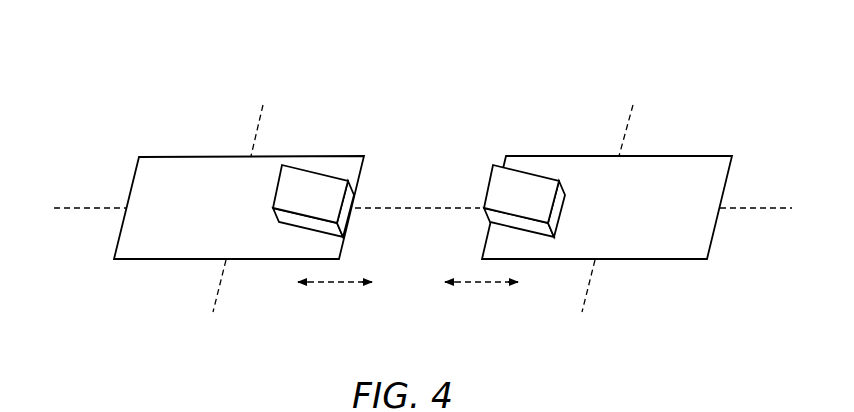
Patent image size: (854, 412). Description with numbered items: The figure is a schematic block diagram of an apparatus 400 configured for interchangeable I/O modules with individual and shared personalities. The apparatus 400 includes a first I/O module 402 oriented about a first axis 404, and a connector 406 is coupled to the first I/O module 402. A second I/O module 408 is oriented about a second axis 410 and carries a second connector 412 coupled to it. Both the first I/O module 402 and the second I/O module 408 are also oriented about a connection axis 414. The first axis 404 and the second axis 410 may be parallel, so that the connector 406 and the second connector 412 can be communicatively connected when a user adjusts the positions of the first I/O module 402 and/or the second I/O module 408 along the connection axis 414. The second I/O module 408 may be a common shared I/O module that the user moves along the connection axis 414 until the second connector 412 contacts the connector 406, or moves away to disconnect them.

The apparatus 400 is at (92, 85).
The first I/O module 402 is at (172, 156).
The first axis 404 is at (219, 290).
The connector 406 is at (320, 183).
The second I/O module 408 is at (703, 156).
The second axis 410 is at (587, 288).
The second connector 412 is at (523, 183).
The connection axis 414 is at (102, 207).